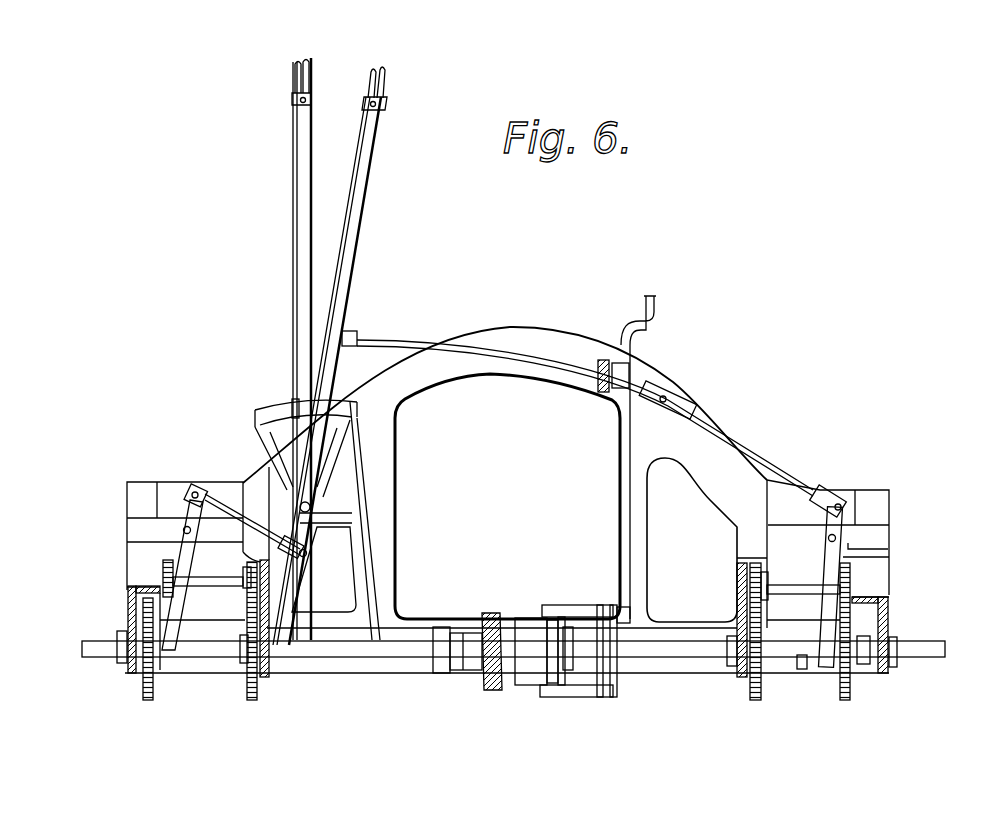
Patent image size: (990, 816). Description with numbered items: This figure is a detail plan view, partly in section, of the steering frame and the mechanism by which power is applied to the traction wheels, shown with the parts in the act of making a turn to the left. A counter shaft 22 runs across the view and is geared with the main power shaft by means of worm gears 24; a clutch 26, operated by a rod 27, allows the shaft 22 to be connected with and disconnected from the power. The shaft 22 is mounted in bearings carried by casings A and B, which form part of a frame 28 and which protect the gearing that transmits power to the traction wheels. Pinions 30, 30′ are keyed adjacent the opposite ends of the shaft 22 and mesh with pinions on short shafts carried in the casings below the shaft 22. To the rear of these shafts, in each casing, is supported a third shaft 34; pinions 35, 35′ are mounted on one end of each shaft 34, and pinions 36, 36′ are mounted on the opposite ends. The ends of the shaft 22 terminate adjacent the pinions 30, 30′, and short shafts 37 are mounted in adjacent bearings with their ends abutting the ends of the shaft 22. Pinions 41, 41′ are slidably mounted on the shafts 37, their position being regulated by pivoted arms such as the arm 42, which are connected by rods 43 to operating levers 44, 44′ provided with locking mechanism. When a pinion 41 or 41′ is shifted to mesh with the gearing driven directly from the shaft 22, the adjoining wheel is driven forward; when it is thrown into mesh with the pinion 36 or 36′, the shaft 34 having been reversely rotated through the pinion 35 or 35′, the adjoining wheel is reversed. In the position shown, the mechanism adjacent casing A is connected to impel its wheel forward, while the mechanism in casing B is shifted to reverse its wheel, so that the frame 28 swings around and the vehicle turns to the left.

The counter shaft 22 is at (414, 647).
The worm gears 24 is at (493, 604).
The clutch 26 is at (530, 627).
The rod 27 is at (622, 478).
The frame 28 is at (692, 540).
The pinion 30 is at (251, 694).
The pinion 30′ is at (755, 698).
The third shaft 34 is at (204, 580).
The pinion 35 is at (293, 570).
The pinion 35′ is at (740, 590).
The pinion 36 is at (130, 592).
The pinion 36′ is at (890, 596).
The short shaft 37 is at (236, 653).
The pinion 41 is at (158, 672).
The pinion 41′ is at (845, 695).
The pivoted arm 42 is at (183, 551).
The rod 43 is at (405, 343).
The operating lever 44 is at (300, 237).
The operating lever 44′ is at (360, 214).
The casing A is at (128, 498).
The casing B is at (873, 517).